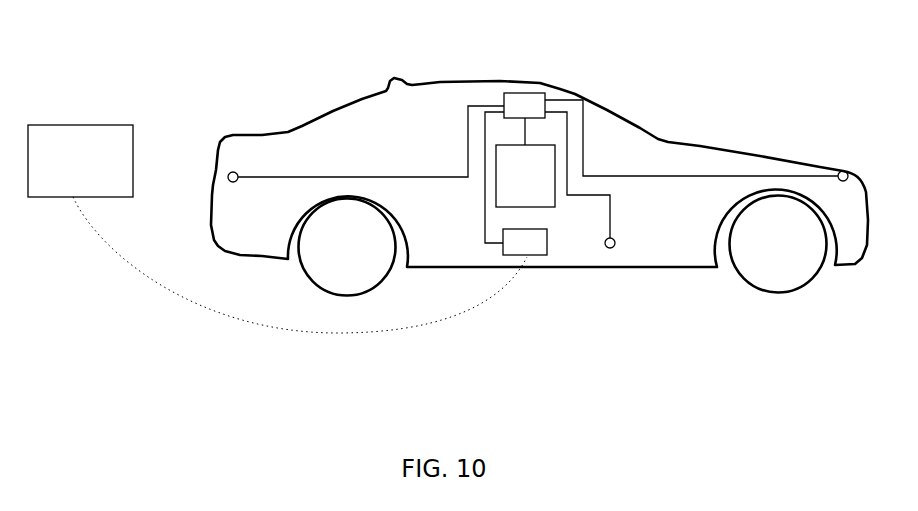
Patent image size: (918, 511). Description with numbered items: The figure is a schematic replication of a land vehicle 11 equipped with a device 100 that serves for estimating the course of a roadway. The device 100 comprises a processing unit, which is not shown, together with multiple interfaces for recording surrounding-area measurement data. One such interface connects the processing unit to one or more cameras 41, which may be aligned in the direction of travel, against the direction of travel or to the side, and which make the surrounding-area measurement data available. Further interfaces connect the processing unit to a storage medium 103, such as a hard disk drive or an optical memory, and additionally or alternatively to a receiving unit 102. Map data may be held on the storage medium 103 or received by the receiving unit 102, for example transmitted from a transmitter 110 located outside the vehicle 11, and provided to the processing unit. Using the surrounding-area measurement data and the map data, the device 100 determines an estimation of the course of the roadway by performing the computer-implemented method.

The vehicle 11 is at (486, 80).
The camera 41 is at (234, 172).
The device 100 is at (524, 105).
The storage medium 103 is at (525, 176).
The receiving unit 102 is at (525, 242).
The transmitter 110 is at (80, 161).